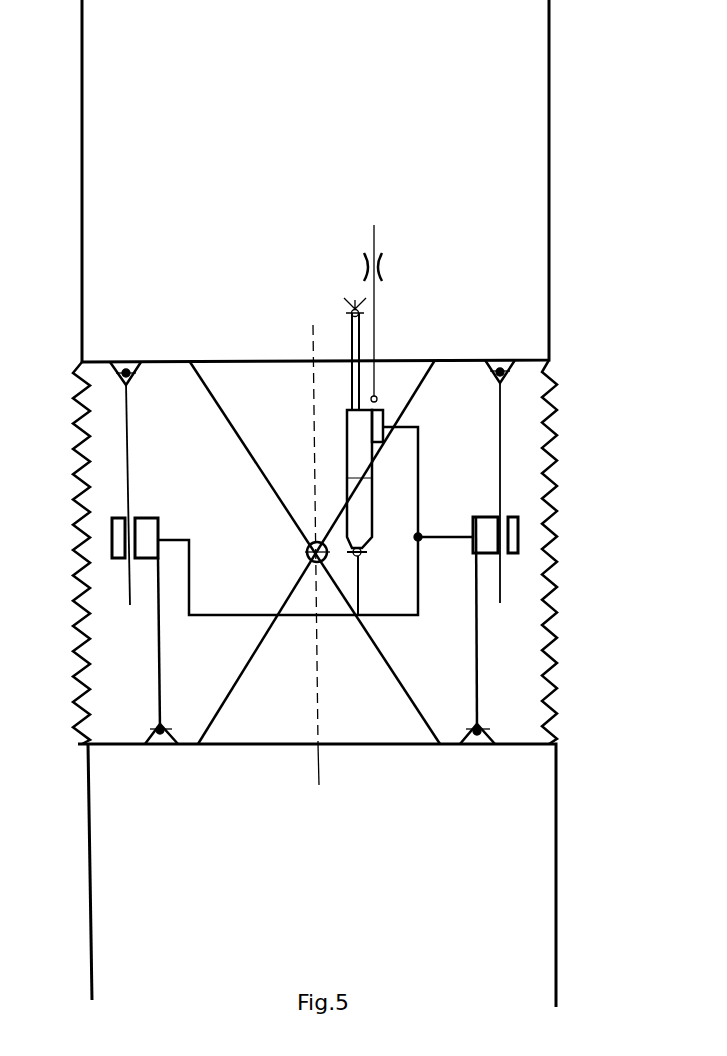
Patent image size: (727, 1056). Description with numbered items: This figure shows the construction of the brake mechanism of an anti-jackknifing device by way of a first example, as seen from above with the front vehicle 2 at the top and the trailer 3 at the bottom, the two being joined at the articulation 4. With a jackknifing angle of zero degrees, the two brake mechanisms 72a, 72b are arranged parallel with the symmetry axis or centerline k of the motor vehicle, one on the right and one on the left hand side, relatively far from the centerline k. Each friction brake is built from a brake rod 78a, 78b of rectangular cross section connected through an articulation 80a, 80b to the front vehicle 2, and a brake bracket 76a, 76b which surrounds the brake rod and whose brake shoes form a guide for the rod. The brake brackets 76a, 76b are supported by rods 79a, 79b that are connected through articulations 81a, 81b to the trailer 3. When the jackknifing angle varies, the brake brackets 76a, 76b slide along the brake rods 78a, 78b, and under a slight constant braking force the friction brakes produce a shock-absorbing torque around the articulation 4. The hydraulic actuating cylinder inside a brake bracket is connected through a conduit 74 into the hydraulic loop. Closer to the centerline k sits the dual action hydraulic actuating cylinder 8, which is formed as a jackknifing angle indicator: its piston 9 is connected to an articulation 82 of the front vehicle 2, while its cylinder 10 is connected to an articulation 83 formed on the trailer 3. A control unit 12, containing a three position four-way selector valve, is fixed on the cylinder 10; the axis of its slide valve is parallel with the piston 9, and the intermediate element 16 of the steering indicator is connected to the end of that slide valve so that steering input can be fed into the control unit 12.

The front vehicle 2 is at (530, 160).
The trailer 3 is at (540, 833).
The articulation 4 is at (305, 552).
The dual action hydraulic actuating cylinder 8 is at (346, 443).
The piston 9 is at (351, 395).
The cylinder 10 is at (346, 478).
The control unit 12 is at (378, 420).
The intermediate element 16 is at (375, 246).
The brake mechanism 72a is at (112, 548).
The brake mechanism 72b is at (515, 535).
The conduit 74 is at (342, 615).
The brake bracket 76a is at (143, 528).
The brake bracket 76b is at (494, 500).
The brake rod 78a is at (128, 437).
The brake rod 78b is at (500, 442).
The rod 79a is at (158, 638).
The rod 79b is at (477, 668).
The articulation 80a is at (120, 375).
The articulation 80b is at (505, 368).
The articulation 81a is at (158, 722).
The articulation 81b is at (477, 716).
The articulation 82 is at (350, 316).
The articulation 83 is at (350, 558).
The centerline k is at (318, 778).